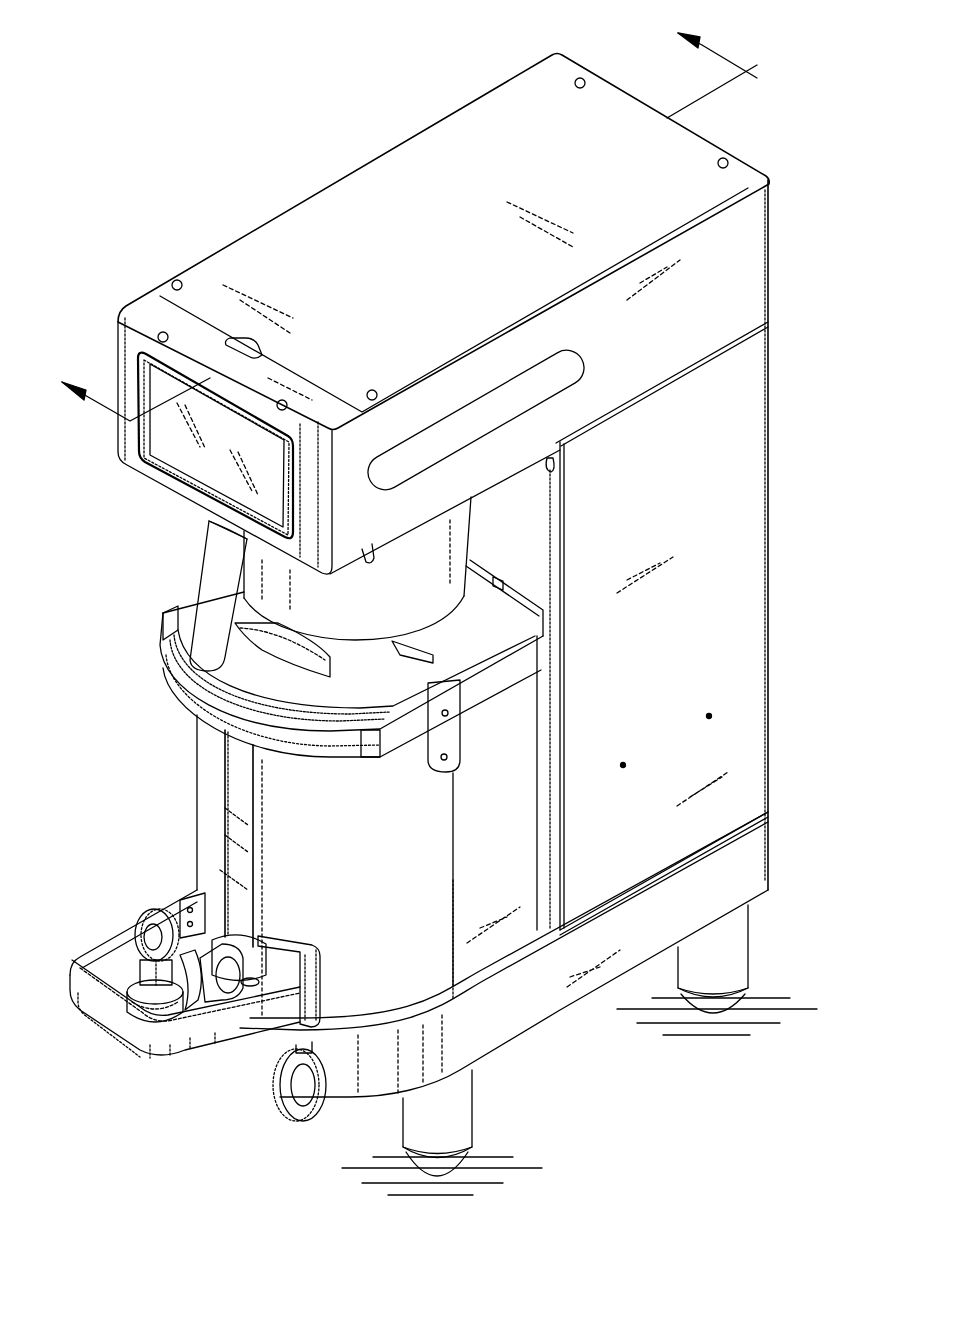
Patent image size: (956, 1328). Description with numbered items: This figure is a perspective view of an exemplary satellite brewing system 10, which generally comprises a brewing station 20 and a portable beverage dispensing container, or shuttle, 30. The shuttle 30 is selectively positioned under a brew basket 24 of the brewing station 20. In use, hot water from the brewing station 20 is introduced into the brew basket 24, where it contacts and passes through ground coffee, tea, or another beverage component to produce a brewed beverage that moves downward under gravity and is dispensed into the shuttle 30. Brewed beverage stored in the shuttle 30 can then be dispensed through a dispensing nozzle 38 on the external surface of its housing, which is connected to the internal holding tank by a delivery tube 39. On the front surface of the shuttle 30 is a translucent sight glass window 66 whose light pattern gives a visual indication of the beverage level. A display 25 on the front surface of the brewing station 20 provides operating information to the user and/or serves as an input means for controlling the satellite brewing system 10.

The satellite brewing system 10 is at (196, 99).
The brewing station 20 is at (768, 447).
The brew basket 24 is at (220, 566).
The display 25 is at (181, 445).
The portable beverage dispensing container 30 is at (196, 818).
The dispensing nozzle 38 is at (140, 1022).
The delivery tube 39 is at (240, 996).
The sight glass window 66 is at (240, 843).